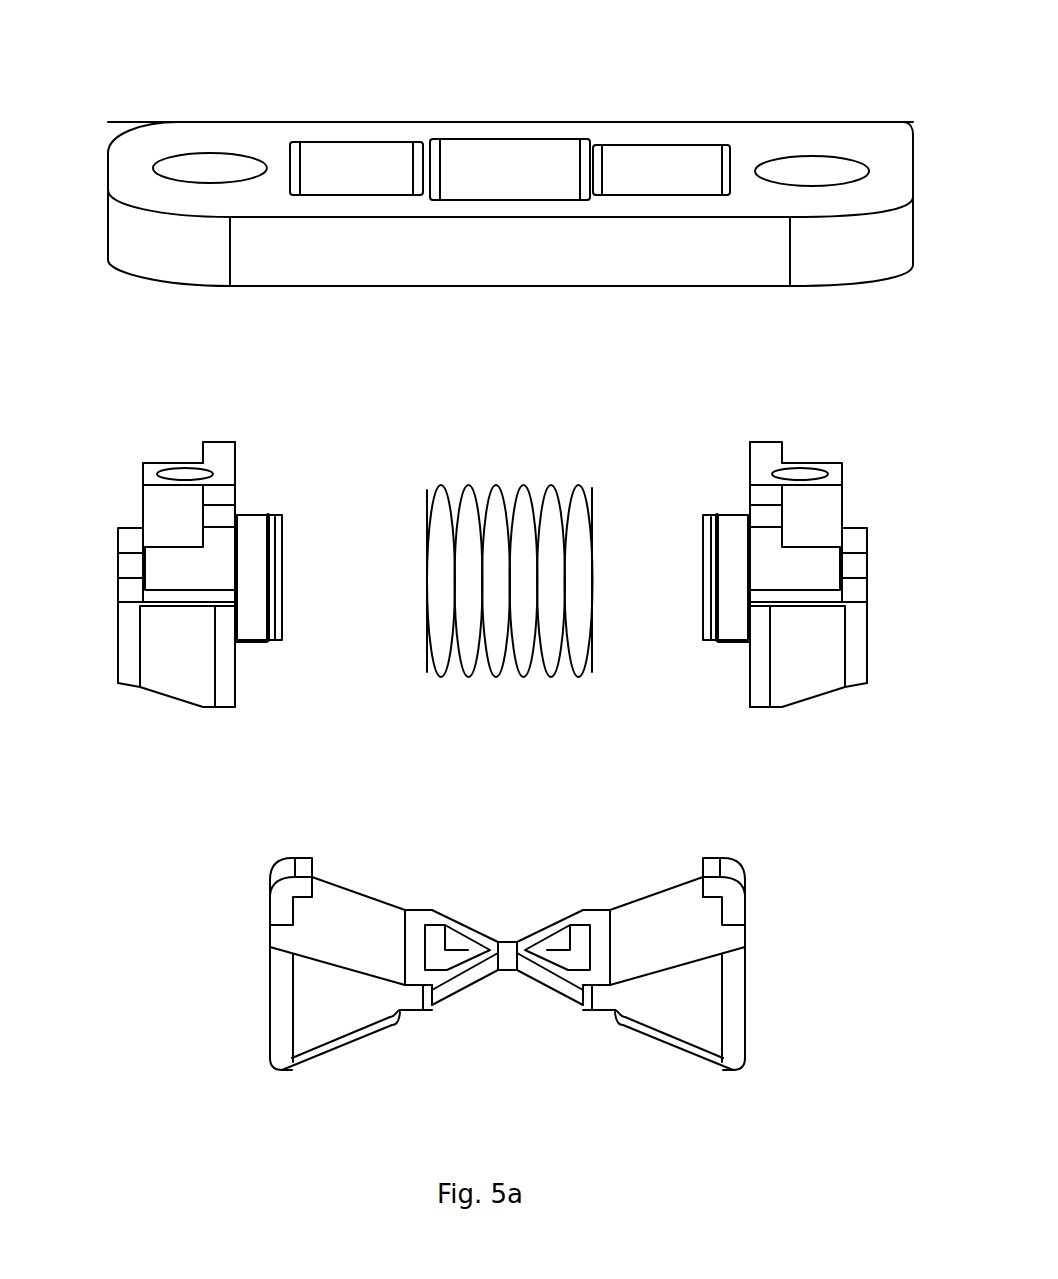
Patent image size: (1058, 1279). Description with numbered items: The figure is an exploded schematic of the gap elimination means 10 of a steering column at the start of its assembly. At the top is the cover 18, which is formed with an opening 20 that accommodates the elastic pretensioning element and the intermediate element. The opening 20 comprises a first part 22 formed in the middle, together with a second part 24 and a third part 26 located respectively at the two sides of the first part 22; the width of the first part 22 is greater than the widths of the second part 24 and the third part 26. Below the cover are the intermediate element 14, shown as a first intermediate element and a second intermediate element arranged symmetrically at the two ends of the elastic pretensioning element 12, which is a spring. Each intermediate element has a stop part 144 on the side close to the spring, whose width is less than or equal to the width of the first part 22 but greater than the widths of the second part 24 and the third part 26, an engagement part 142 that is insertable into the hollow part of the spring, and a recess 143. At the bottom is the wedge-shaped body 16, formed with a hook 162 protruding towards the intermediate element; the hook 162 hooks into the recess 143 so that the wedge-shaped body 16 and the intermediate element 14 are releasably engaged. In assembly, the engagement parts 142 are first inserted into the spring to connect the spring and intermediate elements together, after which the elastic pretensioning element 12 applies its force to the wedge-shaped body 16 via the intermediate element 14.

The gap elimination means 10 is at (771, 32).
The elastic pretensioning element 12 is at (557, 500).
The intermediate element 14 is at (165, 675).
The engagement part 142 is at (278, 528).
The recess 143 is at (128, 563).
The stop part 144 is at (237, 443).
The wedge-shaped body 16 is at (728, 1008).
The hook 162 is at (302, 862).
The cover 18 is at (163, 122).
The opening 20 is at (618, 190).
The first part 22 is at (505, 152).
The second part 24 is at (355, 142).
The third part 26 is at (660, 158).